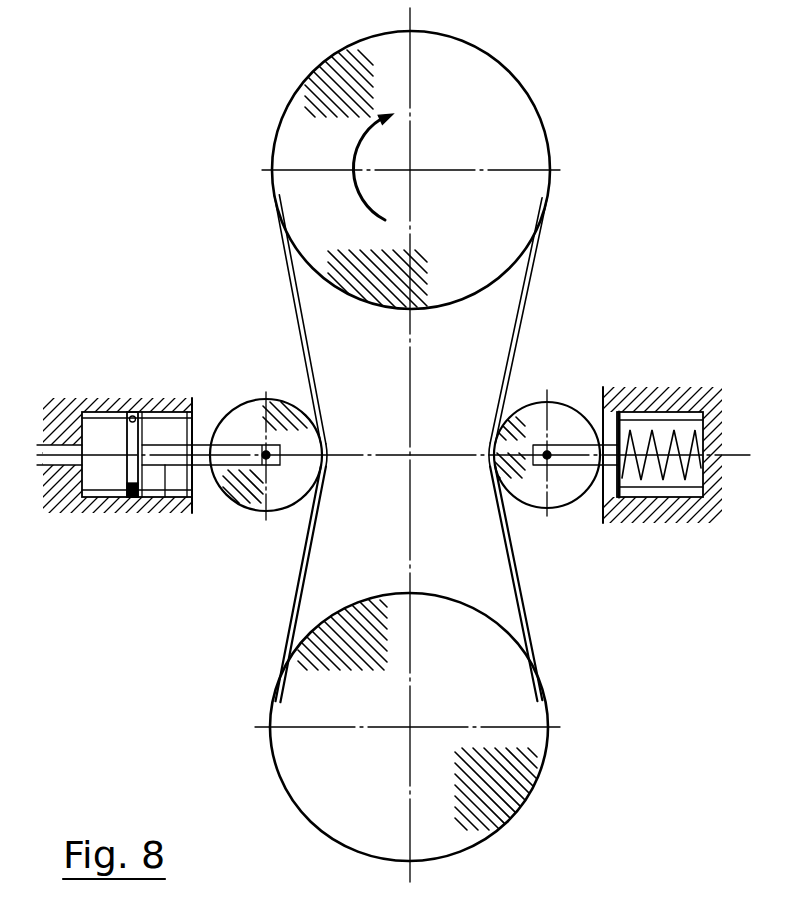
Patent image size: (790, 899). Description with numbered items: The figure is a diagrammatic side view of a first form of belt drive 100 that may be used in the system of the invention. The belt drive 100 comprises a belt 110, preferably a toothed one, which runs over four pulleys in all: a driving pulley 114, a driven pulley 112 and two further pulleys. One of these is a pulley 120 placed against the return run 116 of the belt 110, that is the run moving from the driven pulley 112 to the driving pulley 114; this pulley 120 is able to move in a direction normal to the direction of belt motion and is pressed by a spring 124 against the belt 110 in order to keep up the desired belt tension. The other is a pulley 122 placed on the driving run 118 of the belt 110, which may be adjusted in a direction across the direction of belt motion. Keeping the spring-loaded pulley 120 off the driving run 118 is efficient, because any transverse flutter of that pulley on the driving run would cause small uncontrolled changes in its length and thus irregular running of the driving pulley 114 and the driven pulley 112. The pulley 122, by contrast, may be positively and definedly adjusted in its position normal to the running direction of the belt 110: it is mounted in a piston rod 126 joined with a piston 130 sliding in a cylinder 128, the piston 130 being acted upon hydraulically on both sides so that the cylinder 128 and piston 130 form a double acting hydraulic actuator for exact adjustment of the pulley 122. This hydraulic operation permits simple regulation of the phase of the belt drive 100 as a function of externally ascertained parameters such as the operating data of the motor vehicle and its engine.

The belt drive 100 is at (278, 607).
The belt 110 is at (406, 449).
The driven pulley 112 is at (508, 807).
The driving pulley 114 is at (541, 119).
The return run 116 is at (542, 253).
The driving run 118 is at (289, 261).
The pulley 120 is at (553, 404).
The pulley 122 is at (258, 500).
The spring 124 is at (650, 395).
The piston rod 126 is at (162, 500).
The cylinder 128 is at (105, 500).
The piston 130 is at (133, 412).